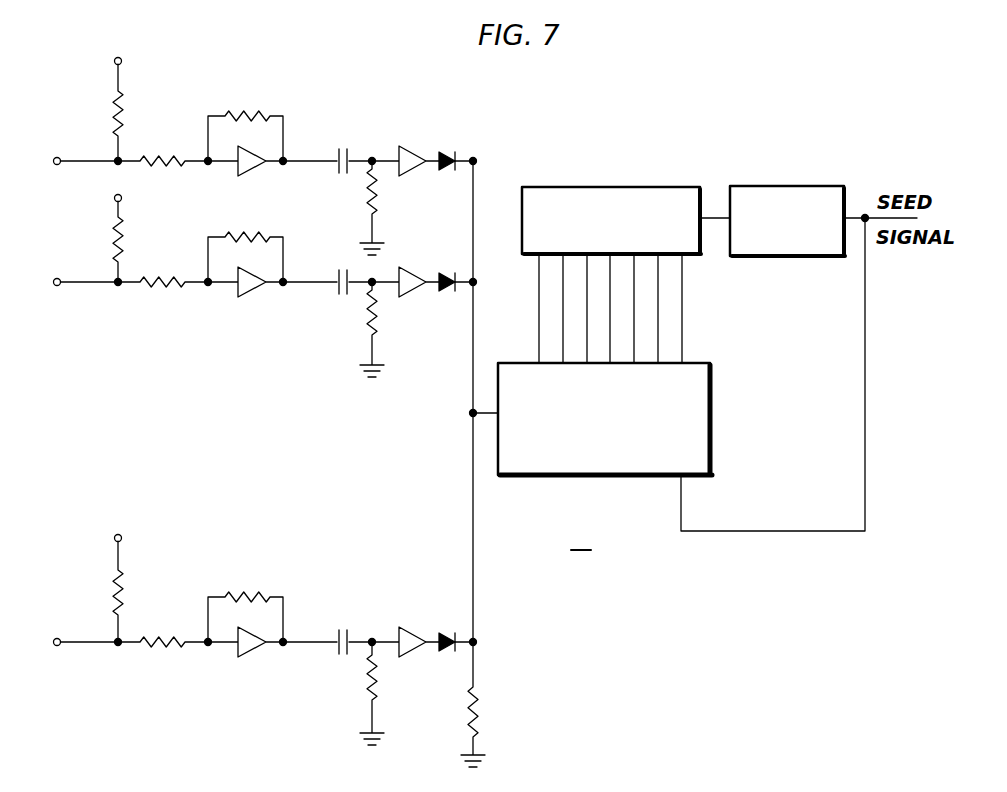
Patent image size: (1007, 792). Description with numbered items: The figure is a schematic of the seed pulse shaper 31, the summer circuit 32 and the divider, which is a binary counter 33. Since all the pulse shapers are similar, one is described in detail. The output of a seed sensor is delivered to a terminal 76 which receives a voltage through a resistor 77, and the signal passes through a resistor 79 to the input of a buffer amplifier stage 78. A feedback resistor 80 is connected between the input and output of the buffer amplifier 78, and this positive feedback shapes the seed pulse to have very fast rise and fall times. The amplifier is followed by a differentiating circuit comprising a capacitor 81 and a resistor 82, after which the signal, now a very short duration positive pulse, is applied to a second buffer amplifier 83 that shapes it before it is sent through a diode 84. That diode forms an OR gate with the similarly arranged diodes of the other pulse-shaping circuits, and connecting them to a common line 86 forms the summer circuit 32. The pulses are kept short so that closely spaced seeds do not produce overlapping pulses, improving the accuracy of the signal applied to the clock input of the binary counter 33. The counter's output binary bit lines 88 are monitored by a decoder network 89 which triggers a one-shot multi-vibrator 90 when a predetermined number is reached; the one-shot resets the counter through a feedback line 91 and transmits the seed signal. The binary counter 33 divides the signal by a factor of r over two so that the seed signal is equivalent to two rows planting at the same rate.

The terminal 76 is at (59, 156).
The resistor 77 is at (122, 130).
The buffer amplifier stage 78 is at (238, 167).
The resistor 79 is at (165, 153).
The feedback resistor 80 is at (243, 113).
The capacitor 81 is at (335, 174).
The resistor 82 is at (378, 190).
The second buffer amplifier 83 is at (405, 150).
The diode 84 is at (462, 156).
The summer circuit 32 is at (456, 145).
The seed pulse shaper 31 is at (291, 402).
The common line 86 is at (472, 331).
The output binary bit lines 88 is at (530, 298).
The decoder network 89 is at (589, 186).
The one-shot multi-vibrator 90 is at (753, 185).
The feedback line 91 is at (761, 530).
The binary counter 33 is at (646, 531).